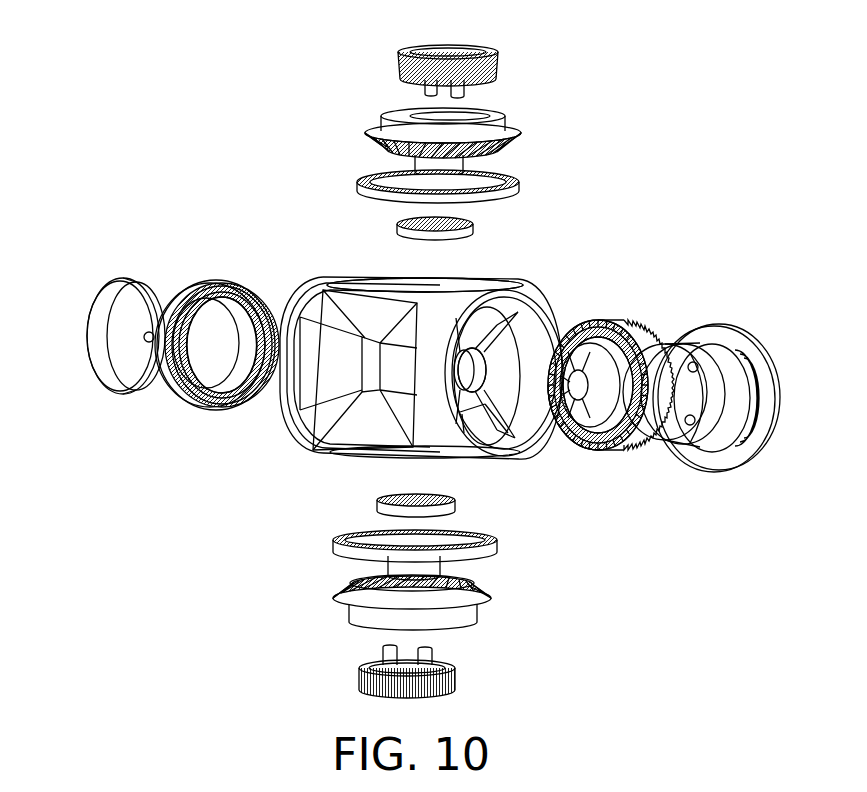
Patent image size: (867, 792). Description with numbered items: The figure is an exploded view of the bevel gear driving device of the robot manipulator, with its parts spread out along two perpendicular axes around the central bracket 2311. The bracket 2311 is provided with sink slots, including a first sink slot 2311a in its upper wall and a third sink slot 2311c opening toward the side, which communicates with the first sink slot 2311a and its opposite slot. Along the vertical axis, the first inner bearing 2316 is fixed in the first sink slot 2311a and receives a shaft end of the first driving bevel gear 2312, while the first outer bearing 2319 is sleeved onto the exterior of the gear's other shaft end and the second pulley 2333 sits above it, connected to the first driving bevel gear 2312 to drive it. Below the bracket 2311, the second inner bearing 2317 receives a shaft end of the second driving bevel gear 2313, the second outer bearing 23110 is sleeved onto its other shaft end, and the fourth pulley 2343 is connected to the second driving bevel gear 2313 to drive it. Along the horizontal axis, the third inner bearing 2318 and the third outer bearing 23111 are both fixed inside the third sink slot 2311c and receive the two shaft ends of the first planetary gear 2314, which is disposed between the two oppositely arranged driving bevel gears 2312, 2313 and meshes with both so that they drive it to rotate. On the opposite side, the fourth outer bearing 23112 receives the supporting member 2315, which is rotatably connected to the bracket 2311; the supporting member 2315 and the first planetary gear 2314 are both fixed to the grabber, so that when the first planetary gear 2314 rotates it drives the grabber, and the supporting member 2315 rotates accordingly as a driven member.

The second pulley 2333 is at (398, 52).
The first driving bevel gear 2312 is at (377, 132).
The first outer bearing 2319 is at (378, 185).
The first inner bearing 2316 is at (400, 223).
The supporting member 2315 is at (108, 310).
The fourth outer bearing 23112 is at (192, 297).
The bracket 2311 is at (267, 402).
The first sink slot 2311a is at (520, 277).
The third sink slot 2311c is at (520, 327).
The third outer bearing 23111 is at (607, 318).
The first planetary gear 2314 is at (640, 327).
The third inner bearing 2318 is at (557, 433).
The second inner bearing 2317 is at (380, 500).
The second outer bearing 23110 is at (363, 557).
The second driving bevel gear 2313 is at (368, 607).
The fourth pulley 2343 is at (362, 678).